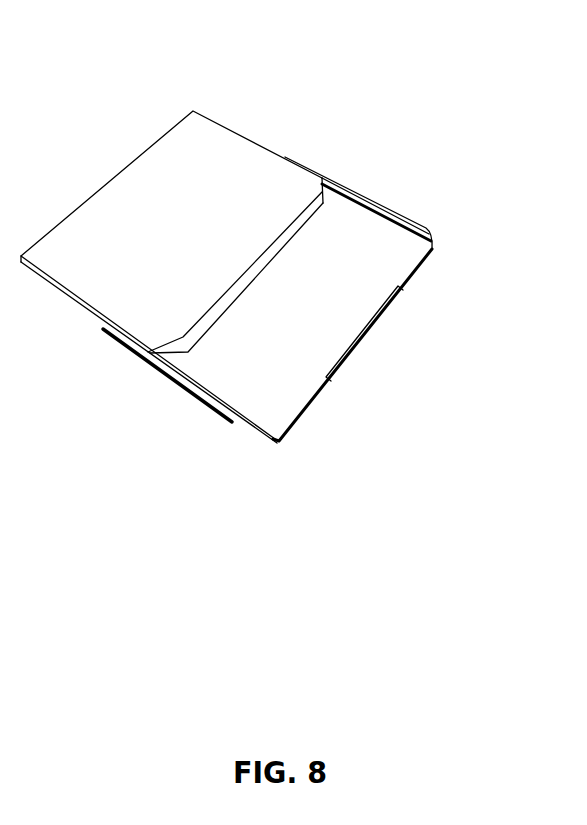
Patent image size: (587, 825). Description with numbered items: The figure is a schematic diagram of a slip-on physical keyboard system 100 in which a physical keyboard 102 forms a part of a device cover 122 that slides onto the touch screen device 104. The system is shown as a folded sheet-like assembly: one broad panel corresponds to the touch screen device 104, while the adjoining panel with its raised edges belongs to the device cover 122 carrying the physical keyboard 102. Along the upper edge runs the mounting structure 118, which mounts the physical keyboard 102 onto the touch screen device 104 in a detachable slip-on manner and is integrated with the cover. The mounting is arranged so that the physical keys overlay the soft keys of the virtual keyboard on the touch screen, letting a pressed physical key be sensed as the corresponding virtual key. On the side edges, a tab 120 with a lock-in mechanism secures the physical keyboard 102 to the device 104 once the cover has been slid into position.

The physical keyboard system 100 is at (280, 122).
The touch screen device 104 is at (210, 117).
The physical keyboard 102 is at (337, 177).
The mounting structure 118 is at (364, 198).
The device cover 122 is at (400, 259).
The tab 120 is at (366, 339).